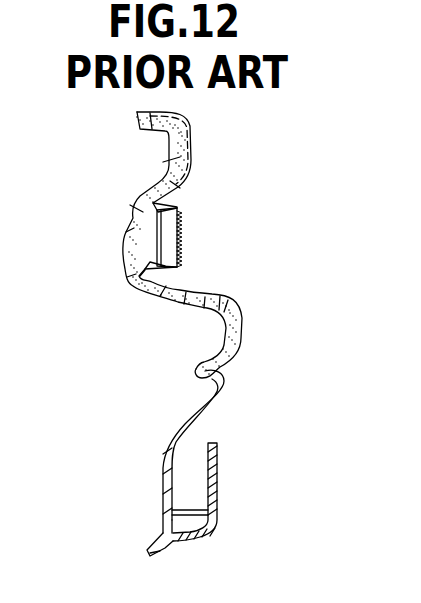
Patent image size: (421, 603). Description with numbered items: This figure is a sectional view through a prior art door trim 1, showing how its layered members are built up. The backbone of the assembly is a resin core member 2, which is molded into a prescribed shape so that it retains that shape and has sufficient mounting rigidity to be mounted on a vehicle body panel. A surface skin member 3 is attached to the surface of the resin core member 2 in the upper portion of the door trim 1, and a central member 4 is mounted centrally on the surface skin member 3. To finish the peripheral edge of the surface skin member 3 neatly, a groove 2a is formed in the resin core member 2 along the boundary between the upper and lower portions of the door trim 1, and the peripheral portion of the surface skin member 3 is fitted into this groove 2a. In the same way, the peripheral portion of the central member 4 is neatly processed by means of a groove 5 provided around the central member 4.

The door trim 1 is at (242, 410).
The resin core member 2 is at (167, 306).
The groove 2a is at (193, 367).
The surface skin member 3 is at (200, 292).
The central member 4 is at (184, 221).
The groove 5 is at (150, 203).